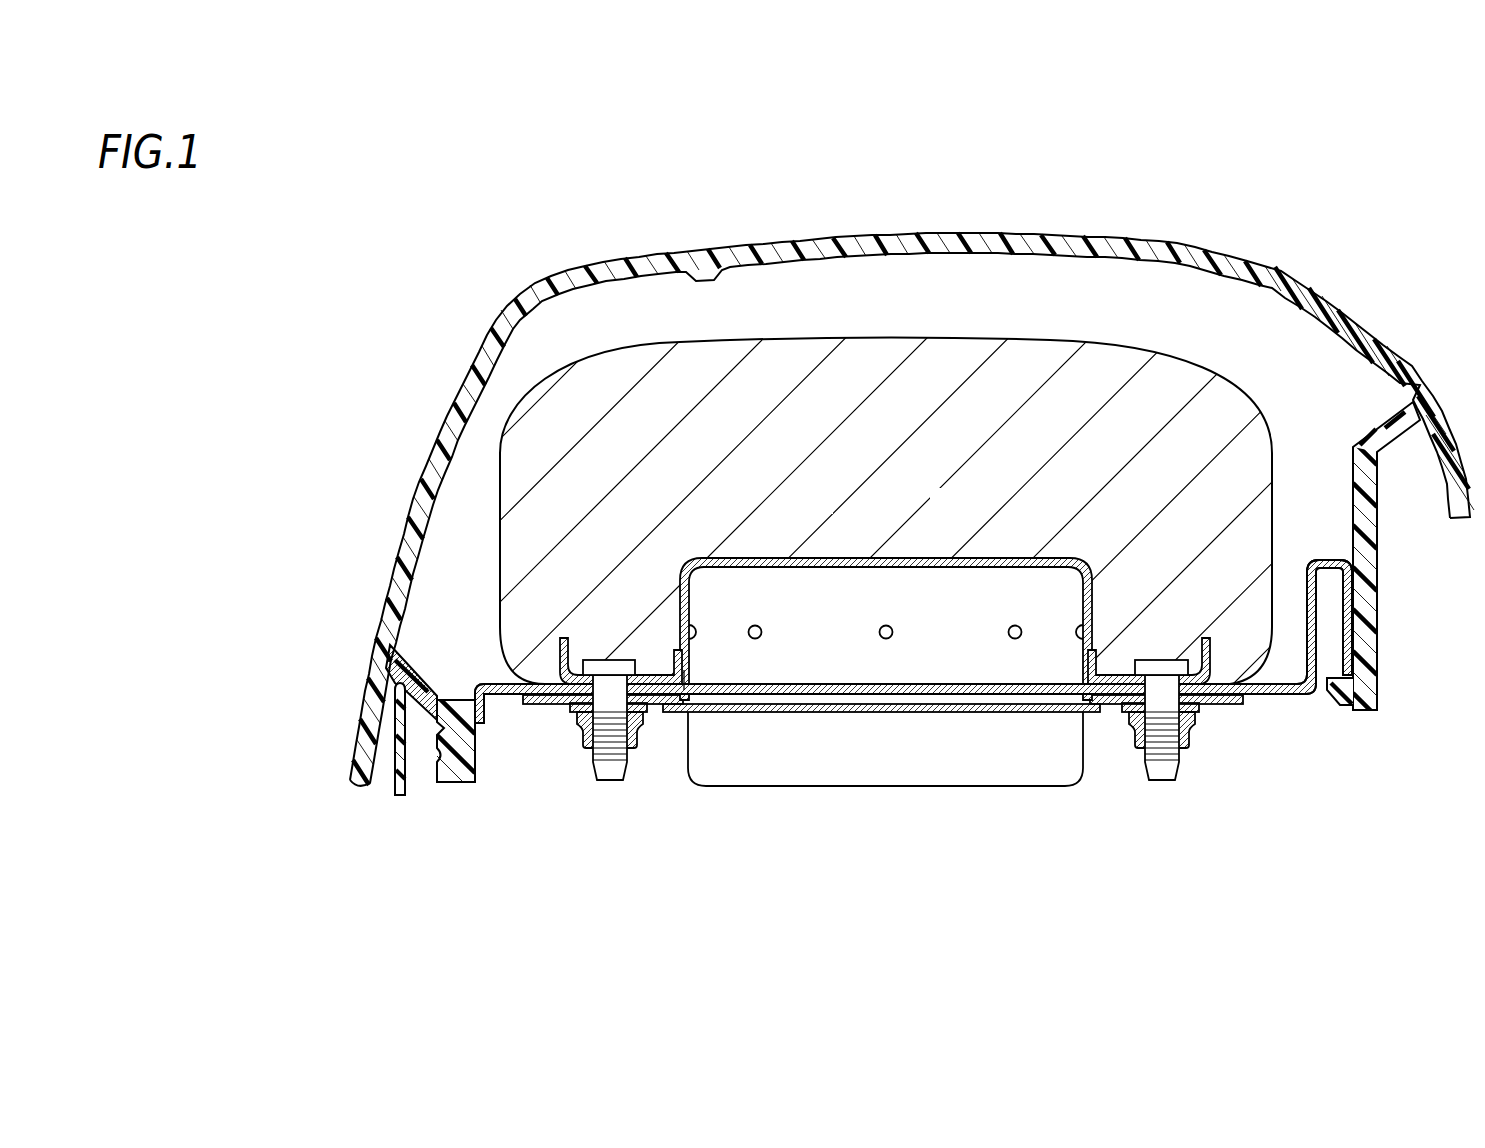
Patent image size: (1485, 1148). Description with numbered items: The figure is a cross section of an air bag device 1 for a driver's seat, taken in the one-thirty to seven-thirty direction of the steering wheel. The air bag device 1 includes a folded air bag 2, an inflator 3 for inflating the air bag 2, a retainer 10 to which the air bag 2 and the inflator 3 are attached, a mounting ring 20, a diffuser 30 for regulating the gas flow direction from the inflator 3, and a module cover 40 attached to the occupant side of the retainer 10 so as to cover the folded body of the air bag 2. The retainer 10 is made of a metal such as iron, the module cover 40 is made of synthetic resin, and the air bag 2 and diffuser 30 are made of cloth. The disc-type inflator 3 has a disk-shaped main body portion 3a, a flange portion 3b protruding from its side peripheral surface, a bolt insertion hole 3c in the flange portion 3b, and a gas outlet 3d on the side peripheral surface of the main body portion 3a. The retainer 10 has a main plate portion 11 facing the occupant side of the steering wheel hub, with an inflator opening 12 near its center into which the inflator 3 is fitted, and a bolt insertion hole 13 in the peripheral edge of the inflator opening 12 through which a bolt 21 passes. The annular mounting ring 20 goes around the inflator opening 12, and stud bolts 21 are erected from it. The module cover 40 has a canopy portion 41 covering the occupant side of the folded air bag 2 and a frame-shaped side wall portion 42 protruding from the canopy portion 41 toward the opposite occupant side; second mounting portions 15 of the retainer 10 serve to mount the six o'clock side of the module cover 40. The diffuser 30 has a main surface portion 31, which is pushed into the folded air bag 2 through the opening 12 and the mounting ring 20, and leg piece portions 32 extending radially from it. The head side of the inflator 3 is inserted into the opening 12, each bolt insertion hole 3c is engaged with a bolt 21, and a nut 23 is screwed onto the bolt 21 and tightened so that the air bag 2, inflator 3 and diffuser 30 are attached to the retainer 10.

The air bag device 1 is at (1215, 164).
The air bag 2 is at (971, 334).
The inflator 3 is at (909, 695).
The main body portion 3a is at (950, 752).
The flange portion 3b is at (838, 704).
The bolt insertion hole 3c is at (575, 712).
The gas outlet 3d is at (700, 628).
The retainer 10 is at (899, 682).
The main plate portion 11 is at (1283, 686).
The inflator opening 12 is at (698, 681).
The bolt insertion hole 13 is at (612, 668).
The second mounting portion 15 is at (1307, 590).
The mounting ring 20 is at (565, 650).
The bolt 21 is at (612, 782).
The nut 23 is at (636, 740).
The diffuser 30 is at (917, 549).
The main surface portion 31 is at (815, 556).
The leg piece portion 32 is at (535, 704).
The module cover 40 is at (912, 473).
The canopy portion 41 is at (830, 234).
The side wall portion 42 is at (1378, 570).